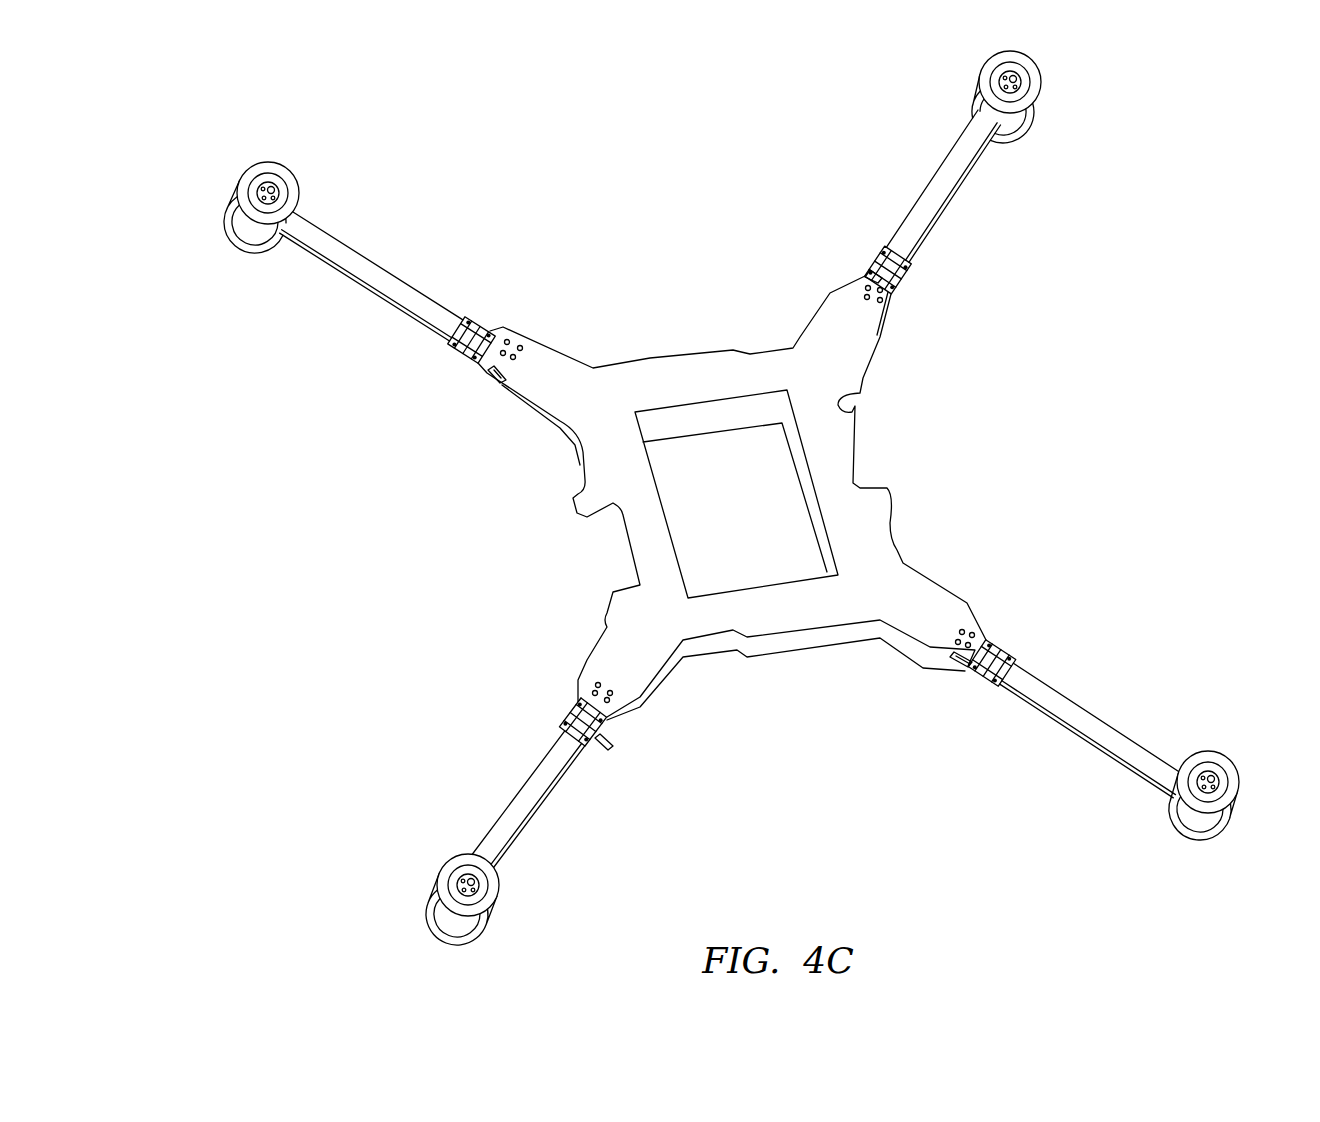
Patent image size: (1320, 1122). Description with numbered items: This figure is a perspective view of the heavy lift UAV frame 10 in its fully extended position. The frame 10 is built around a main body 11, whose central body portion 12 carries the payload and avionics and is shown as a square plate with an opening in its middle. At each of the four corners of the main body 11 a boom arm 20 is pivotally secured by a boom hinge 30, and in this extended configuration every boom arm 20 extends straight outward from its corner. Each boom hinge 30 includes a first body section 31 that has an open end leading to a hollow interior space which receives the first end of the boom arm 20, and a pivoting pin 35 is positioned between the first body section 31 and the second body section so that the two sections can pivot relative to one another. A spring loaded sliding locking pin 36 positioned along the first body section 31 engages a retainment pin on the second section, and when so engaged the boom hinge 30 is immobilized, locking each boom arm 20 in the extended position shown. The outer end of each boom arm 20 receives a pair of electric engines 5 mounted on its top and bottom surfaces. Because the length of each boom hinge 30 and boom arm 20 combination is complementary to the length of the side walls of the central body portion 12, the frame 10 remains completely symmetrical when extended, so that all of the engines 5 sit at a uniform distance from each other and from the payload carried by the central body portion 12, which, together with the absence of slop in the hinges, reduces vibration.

The electric engine 5 is at (300, 193).
The heavy lift UAV frame 10 is at (698, 498).
The main body 11 is at (930, 455).
The central body portion 12 is at (716, 458).
The boom arm 20 is at (410, 265).
The boom hinge 30 is at (487, 320).
The first body section 31 is at (460, 352).
The pivoting pin 35 is at (868, 272).
The spring loaded sliding locking pin 36 is at (477, 375).